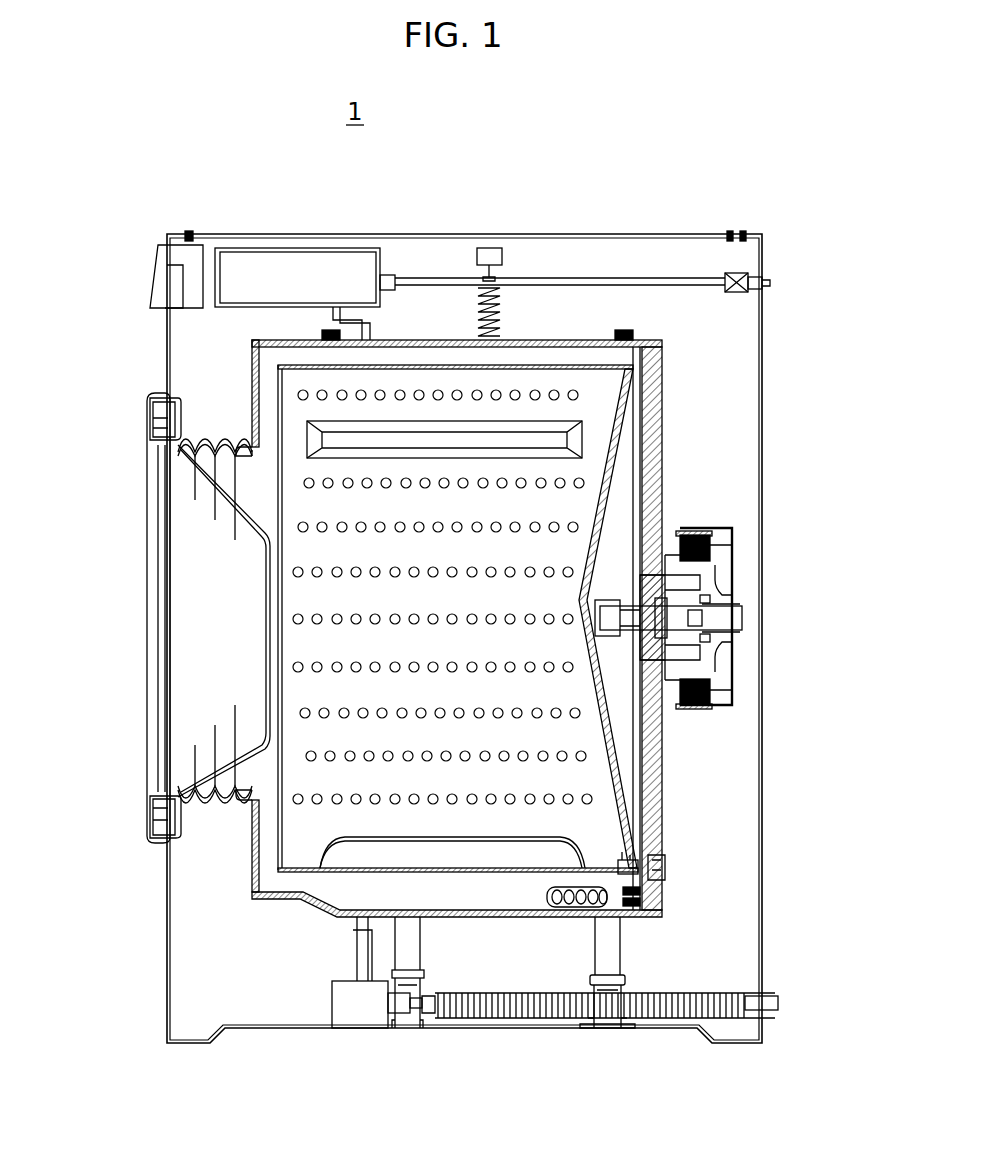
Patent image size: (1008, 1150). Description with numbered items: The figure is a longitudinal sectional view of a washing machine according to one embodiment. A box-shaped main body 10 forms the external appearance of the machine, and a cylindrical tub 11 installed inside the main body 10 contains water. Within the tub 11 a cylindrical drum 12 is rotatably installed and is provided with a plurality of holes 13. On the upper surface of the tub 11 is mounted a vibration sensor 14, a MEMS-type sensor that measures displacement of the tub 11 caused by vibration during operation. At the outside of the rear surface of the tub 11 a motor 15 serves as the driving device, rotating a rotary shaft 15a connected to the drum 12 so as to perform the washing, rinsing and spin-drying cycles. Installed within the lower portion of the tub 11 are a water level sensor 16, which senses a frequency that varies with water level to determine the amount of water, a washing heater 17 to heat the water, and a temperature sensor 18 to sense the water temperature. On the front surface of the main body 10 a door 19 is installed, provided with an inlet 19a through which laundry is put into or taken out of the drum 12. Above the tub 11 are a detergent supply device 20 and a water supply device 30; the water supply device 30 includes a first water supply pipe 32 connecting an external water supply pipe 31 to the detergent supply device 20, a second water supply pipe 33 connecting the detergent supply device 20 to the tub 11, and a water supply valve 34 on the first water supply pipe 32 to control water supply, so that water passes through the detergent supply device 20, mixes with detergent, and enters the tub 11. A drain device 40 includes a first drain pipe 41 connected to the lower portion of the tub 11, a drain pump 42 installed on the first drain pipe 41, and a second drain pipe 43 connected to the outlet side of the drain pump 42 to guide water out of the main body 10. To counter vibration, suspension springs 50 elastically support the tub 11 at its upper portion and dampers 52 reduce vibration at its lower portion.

The main body 10 is at (763, 410).
The tub 11 is at (432, 340).
The drum 12 is at (590, 365).
The holes 13 is at (585, 483).
The vibration sensor 14 is at (322, 335).
The motor 15 is at (748, 600).
The rotary shaft 15a is at (688, 618).
The water level sensor 16 is at (642, 917).
The washing heater 17 is at (665, 868).
The temperature sensor 18 is at (662, 897).
The door 19 is at (150, 662).
The inlet 19a is at (195, 800).
The detergent supply device 20 is at (276, 248).
The water supply device 30 is at (730, 271).
The external water supply pipe 31 is at (770, 283).
The first water supply pipe 32 is at (615, 278).
The second water supply pipe 33 is at (333, 312).
The water supply valve 34 is at (750, 273).
The drain device 40 is at (396, 978).
The first drain pipe 41 is at (357, 948).
The drain pump 42 is at (360, 1002).
The second drain pipe 43 is at (431, 1028).
The suspension springs 50 is at (492, 300).
The dampers 52 is at (618, 945).